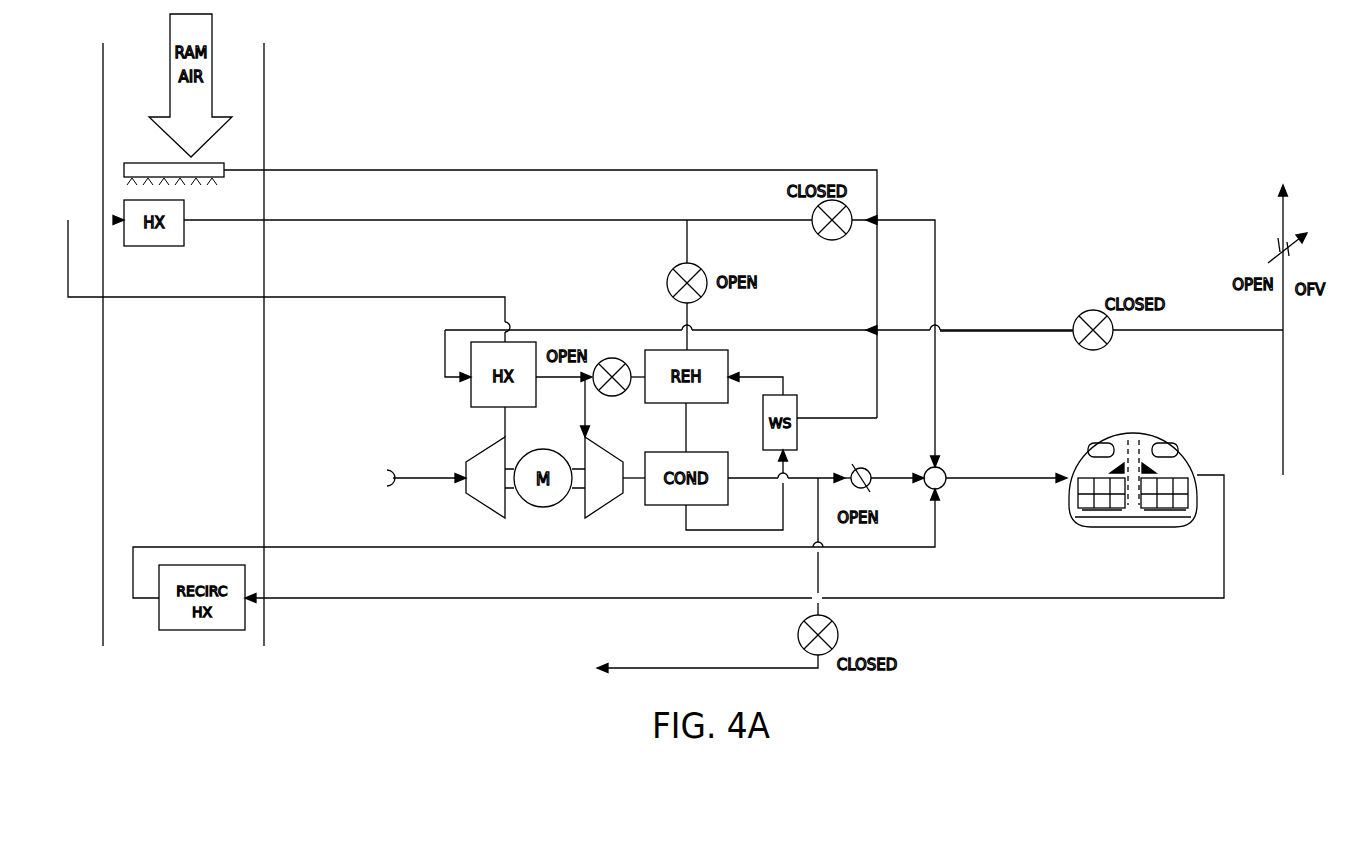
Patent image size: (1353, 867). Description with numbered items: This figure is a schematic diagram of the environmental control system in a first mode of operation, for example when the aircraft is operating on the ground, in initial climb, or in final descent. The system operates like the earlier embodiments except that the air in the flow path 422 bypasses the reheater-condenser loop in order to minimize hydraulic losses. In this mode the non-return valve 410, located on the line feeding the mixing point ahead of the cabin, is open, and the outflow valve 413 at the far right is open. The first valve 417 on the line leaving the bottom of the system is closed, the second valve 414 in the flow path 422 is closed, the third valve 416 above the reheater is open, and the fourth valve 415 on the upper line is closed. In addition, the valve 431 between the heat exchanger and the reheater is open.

The non-return valve 410 is at (866, 469).
The outflow valve 413 is at (1270, 264).
The second valve 414 is at (1093, 310).
The fourth valve 415 is at (832, 241).
The third valve 416 is at (668, 278).
The first valve 417 is at (798, 634).
The flow path 422 is at (1018, 329).
The valve 431 is at (618, 396).